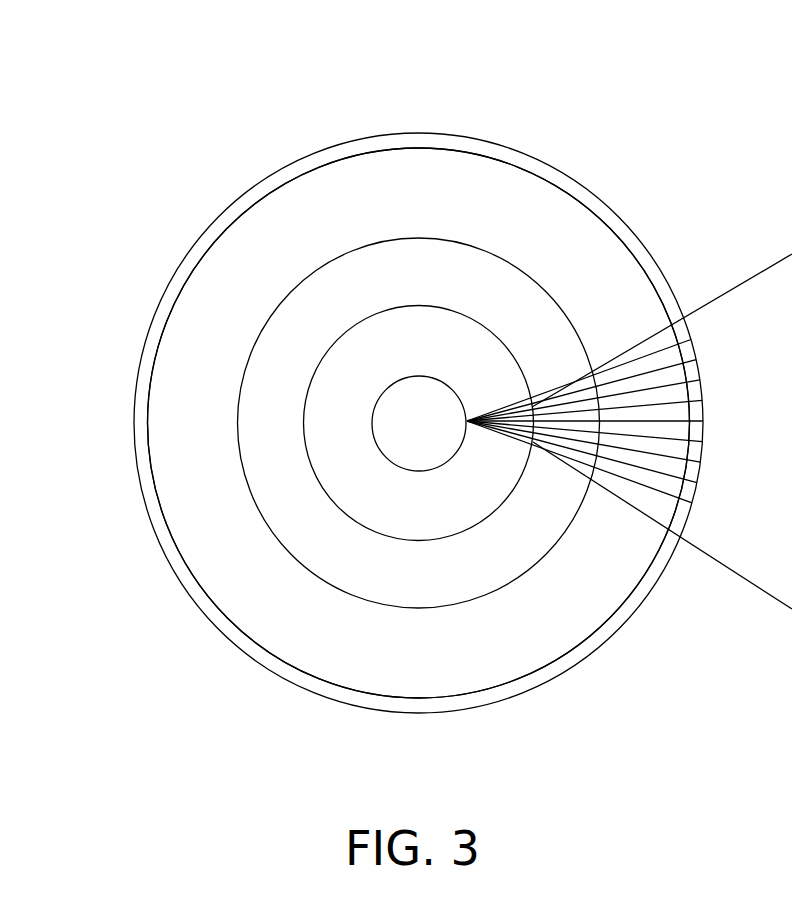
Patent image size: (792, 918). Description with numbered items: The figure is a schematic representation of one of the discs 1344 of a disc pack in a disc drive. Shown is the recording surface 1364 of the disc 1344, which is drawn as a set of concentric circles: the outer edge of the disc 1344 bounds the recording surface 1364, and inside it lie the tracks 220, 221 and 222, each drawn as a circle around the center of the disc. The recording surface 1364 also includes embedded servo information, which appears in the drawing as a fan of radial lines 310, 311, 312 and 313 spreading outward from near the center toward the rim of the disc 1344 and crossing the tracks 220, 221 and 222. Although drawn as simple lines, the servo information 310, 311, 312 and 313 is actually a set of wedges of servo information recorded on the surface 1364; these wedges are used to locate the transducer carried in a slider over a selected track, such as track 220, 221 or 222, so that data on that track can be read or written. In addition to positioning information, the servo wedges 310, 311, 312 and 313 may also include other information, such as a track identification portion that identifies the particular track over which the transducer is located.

The track 220 is at (330, 167).
The track 221 is at (492, 249).
The track 222 is at (343, 338).
The servo information line 310 is at (706, 438).
The servo information line 311 is at (709, 422).
The servo information line 312 is at (707, 398).
The servo information line 313 is at (706, 369).
The disc 1344 is at (217, 630).
The recording surface 1364 is at (331, 671).